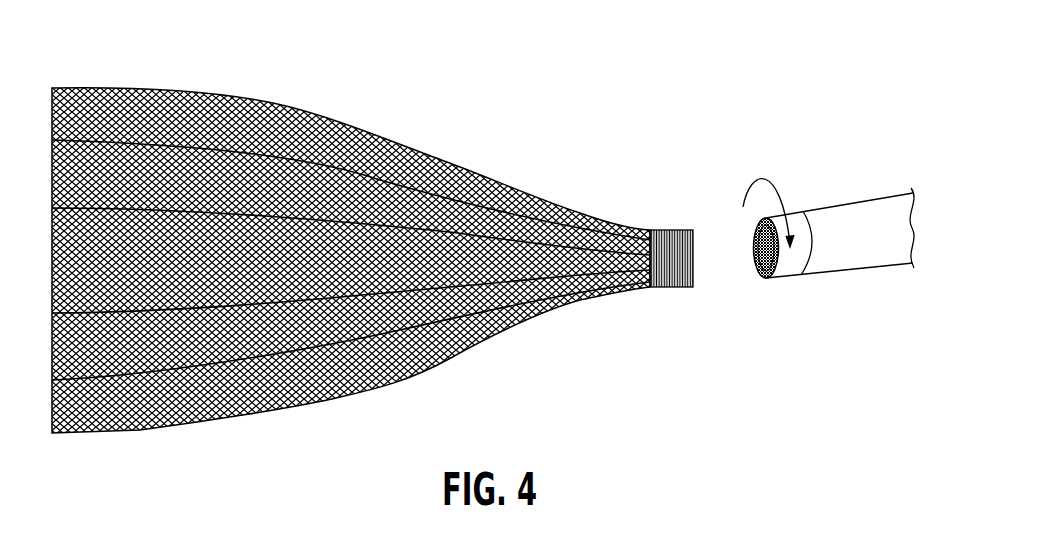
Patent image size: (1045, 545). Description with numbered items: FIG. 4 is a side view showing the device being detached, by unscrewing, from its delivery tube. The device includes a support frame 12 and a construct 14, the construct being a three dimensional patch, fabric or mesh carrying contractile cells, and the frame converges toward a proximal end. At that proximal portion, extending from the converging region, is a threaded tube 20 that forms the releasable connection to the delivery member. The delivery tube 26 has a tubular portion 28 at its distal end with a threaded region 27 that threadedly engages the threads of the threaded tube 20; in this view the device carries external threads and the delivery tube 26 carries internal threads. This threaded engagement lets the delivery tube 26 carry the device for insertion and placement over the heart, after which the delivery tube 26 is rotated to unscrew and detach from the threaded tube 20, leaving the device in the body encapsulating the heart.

The support frame 12 is at (285, 106).
The construct 14 is at (370, 128).
The threaded tube 20 is at (672, 228).
The delivery tube 26 is at (855, 267).
The threaded region 27 is at (762, 282).
The tubular portion 28 is at (794, 212).